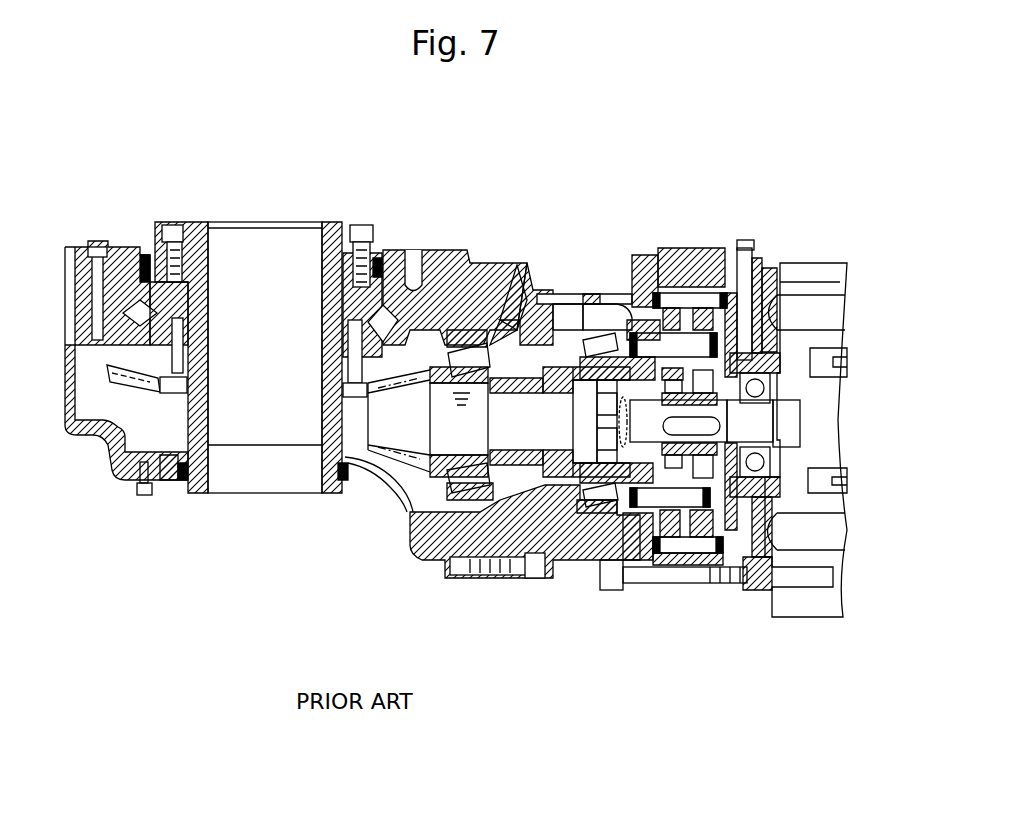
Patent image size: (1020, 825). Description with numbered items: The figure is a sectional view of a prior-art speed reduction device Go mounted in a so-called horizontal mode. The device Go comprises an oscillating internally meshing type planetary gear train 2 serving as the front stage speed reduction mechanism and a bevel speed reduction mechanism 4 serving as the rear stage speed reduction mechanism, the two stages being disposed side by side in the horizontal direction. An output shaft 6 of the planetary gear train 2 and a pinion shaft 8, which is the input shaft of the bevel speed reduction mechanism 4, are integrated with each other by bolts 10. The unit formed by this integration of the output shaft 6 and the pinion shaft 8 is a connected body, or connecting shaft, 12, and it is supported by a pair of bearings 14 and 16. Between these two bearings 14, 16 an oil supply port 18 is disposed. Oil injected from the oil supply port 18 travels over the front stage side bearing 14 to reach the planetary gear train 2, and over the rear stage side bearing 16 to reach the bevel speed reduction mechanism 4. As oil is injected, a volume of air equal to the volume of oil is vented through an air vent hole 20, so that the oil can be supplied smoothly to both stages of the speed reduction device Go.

The oscillating internally meshing type planetary gear train 2 is at (712, 242).
The bevel speed reduction mechanism 4 is at (392, 365).
The output shaft 6 is at (547, 485).
The pinion shaft 8 is at (457, 432).
The bolts 10 is at (607, 443).
The connected body 12 is at (337, 552).
The bearing 14 is at (597, 330).
The bearing 16 is at (483, 330).
The oil supply port 18 is at (567, 295).
The air vent hole 20 is at (740, 312).
The speed reduction device Go is at (644, 186).